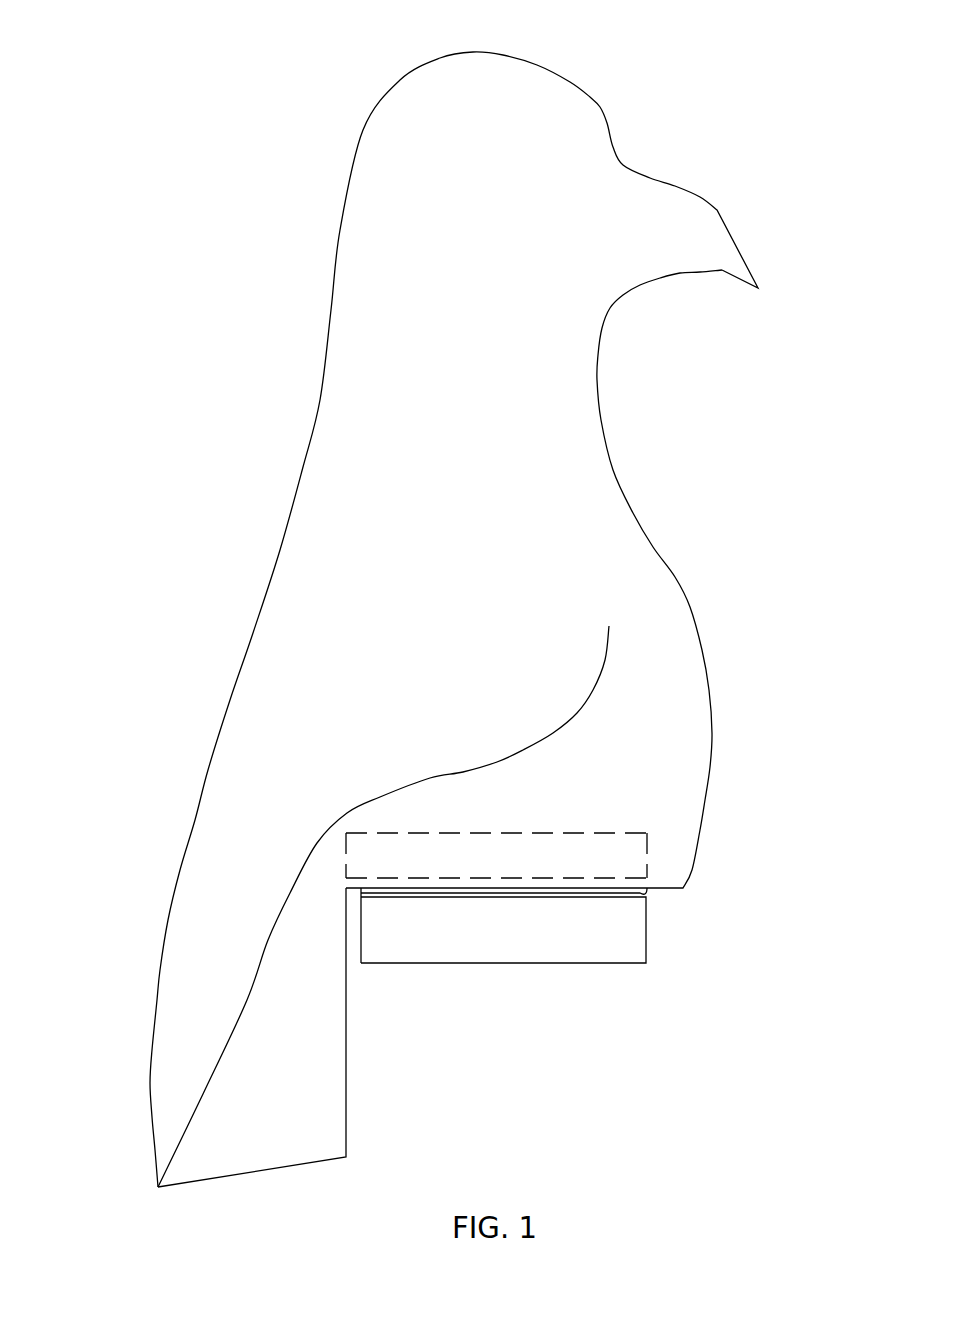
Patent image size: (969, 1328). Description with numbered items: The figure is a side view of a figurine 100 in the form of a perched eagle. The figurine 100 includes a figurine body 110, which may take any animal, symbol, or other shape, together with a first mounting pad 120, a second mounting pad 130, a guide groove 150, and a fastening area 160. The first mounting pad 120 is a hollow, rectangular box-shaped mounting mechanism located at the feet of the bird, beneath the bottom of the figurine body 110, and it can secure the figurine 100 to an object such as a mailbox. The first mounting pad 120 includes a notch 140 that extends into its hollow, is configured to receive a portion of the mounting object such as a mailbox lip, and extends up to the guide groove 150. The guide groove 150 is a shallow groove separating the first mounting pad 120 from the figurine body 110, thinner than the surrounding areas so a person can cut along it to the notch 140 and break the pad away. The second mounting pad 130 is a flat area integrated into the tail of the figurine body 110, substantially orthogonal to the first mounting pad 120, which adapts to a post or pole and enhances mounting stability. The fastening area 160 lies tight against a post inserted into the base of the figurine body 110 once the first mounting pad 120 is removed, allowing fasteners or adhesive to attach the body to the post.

The figurine 100 is at (150, 60).
The figurine body 110 is at (303, 467).
The first mounting pad 120 is at (535, 963).
The second mounting pad 130 is at (348, 1130).
The notch 140 is at (353, 933).
The guide groove 150 is at (647, 894).
The fastening area 160 is at (637, 828).